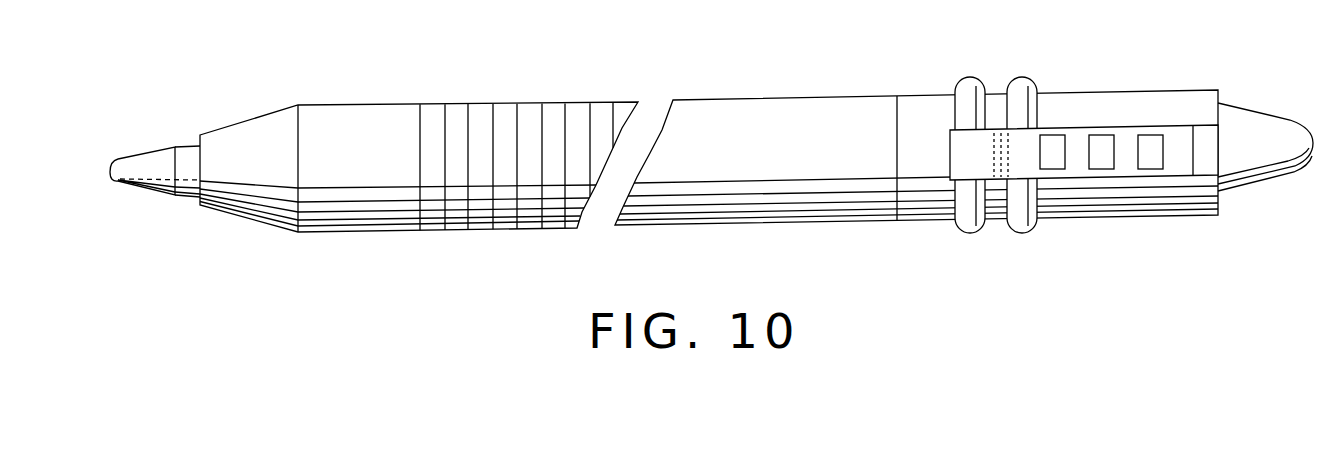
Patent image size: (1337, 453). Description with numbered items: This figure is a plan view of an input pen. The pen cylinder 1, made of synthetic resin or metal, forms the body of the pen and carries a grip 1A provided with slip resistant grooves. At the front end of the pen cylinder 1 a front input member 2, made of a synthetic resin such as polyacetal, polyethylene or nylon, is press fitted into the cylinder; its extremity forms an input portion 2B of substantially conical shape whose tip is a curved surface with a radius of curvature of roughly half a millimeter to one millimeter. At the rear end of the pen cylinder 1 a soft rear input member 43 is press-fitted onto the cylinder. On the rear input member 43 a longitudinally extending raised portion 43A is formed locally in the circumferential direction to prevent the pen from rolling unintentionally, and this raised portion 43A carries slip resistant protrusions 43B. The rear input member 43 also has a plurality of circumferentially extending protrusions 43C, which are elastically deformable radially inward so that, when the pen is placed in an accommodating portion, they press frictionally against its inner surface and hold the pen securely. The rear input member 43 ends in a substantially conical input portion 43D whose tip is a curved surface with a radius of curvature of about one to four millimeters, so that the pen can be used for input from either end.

The pen cylinder 1 is at (744, 114).
The grip 1A is at (505, 110).
The front input member 2 is at (148, 140).
The input portion 2B is at (132, 190).
The rear input member 43 is at (1093, 138).
The raised portion 43A is at (950, 138).
The slip resistant protrusions 43B is at (1148, 145).
The protrusions 43C is at (1012, 80).
The input portion 43D is at (1296, 175).